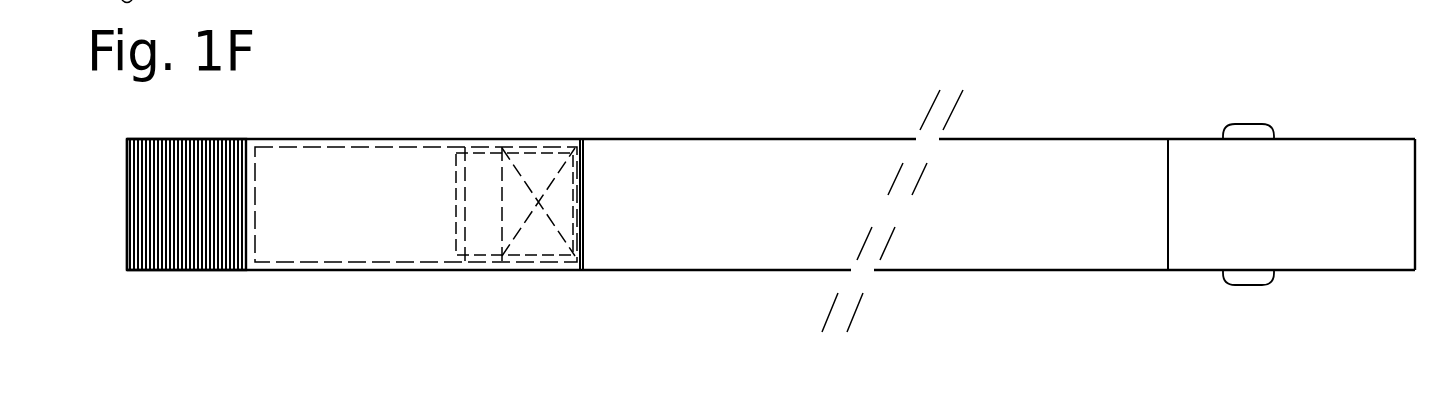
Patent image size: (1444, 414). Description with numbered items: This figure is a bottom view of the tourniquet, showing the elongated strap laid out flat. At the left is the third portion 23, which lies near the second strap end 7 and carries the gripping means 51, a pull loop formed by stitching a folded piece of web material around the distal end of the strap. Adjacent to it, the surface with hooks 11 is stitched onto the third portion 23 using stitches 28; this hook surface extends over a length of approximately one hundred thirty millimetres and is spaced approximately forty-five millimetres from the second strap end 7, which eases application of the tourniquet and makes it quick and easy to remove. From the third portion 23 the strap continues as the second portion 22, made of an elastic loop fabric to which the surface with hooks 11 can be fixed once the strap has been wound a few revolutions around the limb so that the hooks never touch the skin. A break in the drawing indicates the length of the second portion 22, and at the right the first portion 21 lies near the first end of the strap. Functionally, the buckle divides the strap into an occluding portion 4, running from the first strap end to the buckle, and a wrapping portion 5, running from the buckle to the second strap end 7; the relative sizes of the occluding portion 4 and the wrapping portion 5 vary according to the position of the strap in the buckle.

The occluding portion 4 is at (1329, 285).
The wrapping portion 5 is at (213, 300).
The second strap end 7 is at (127, 190).
The surface with hooks 11 is at (369, 158).
The first portion 21 is at (1332, 157).
The second portion 22 is at (1063, 157).
The third portion 23 is at (190, 139).
The stitches 28 is at (417, 147).
The gripping means 51 is at (162, 257).